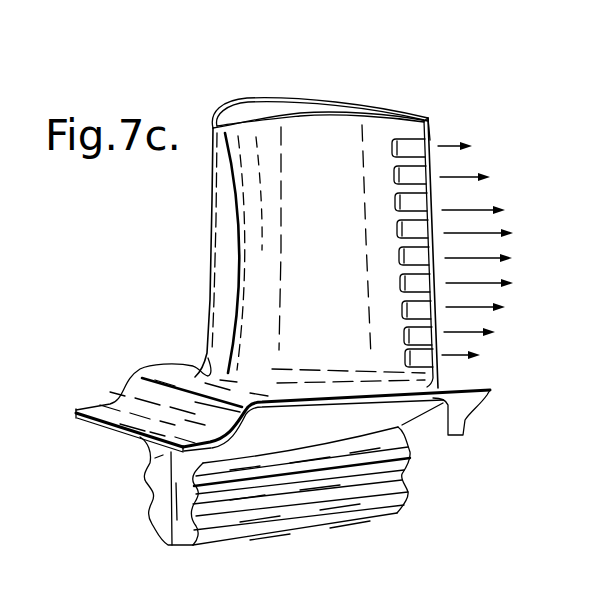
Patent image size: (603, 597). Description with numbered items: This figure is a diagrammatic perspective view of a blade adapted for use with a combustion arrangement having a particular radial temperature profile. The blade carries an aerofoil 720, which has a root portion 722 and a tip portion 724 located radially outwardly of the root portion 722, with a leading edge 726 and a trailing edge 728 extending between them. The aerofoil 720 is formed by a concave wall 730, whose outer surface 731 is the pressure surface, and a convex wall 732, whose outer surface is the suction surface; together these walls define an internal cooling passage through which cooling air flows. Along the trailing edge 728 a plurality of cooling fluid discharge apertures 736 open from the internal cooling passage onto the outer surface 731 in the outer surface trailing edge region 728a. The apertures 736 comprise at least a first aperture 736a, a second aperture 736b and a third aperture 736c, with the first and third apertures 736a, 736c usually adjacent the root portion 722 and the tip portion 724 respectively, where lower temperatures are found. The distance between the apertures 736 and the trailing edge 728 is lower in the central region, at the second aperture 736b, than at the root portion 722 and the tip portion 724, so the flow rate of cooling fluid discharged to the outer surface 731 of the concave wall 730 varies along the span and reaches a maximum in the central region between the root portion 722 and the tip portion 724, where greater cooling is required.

The aerofoil 720 is at (384, 98).
The root portion 722 is at (250, 385).
The tip portion 724 is at (342, 108).
The leading edge 726 is at (220, 261).
The trailing edge 728 is at (428, 158).
The outer surface trailing edge region 728a is at (415, 108).
The concave wall 730 is at (362, 352).
The outer surface 731 is at (316, 357).
The convex wall 732 is at (233, 98).
The cooling fluid discharge apertures 736 is at (425, 306).
The first aperture 736a is at (420, 357).
The second aperture 736b is at (427, 277).
The third aperture 736c is at (410, 142).